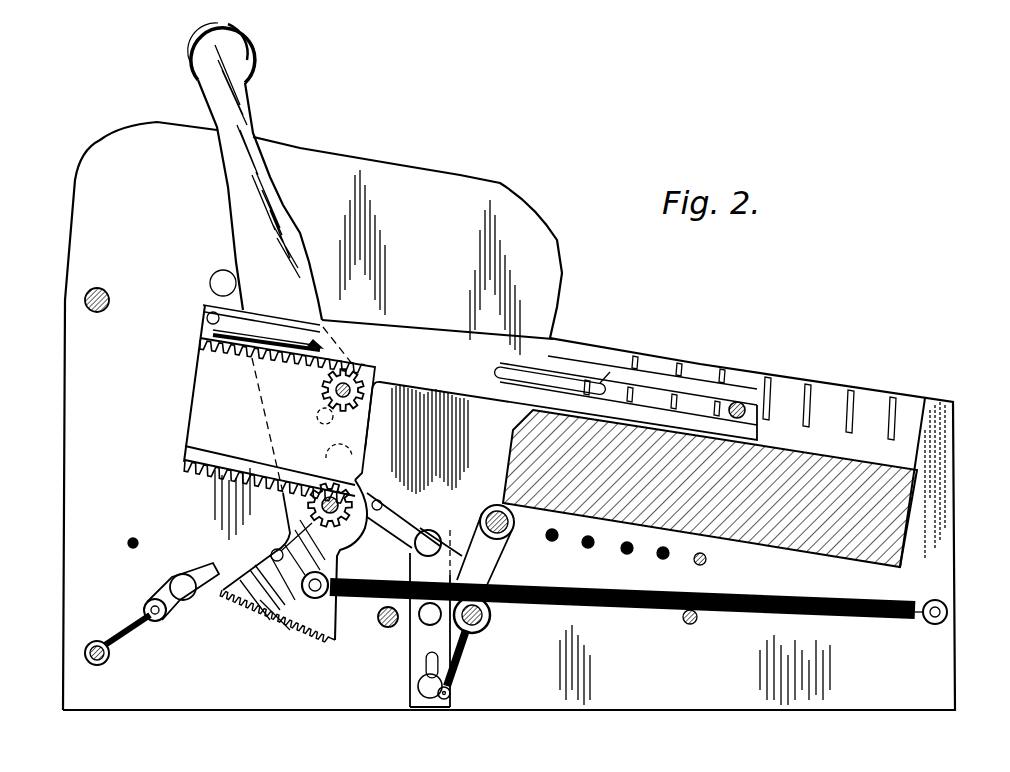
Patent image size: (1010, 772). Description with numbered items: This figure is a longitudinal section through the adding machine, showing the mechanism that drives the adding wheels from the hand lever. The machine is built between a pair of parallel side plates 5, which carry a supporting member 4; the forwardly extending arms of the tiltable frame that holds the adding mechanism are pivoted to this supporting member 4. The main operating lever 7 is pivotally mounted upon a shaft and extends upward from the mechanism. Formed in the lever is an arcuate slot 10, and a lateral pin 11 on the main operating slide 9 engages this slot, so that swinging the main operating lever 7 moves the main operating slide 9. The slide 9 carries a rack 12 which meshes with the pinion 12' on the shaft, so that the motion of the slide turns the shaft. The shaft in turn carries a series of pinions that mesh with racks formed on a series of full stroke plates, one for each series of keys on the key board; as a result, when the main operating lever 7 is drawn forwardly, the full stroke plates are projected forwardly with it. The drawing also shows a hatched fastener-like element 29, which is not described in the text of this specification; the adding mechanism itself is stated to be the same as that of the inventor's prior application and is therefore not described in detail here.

The side plates 5 is at (80, 188).
The screw 29 is at (110, 293).
The main operating lever 7 is at (288, 218).
The main operating slide 9 is at (452, 348).
The arcuate slot 10 is at (350, 330).
The lateral pin 11 is at (320, 414).
The rack 12 is at (246, 404).
The pinion 12' is at (264, 504).
The supporting member 4 is at (920, 480).